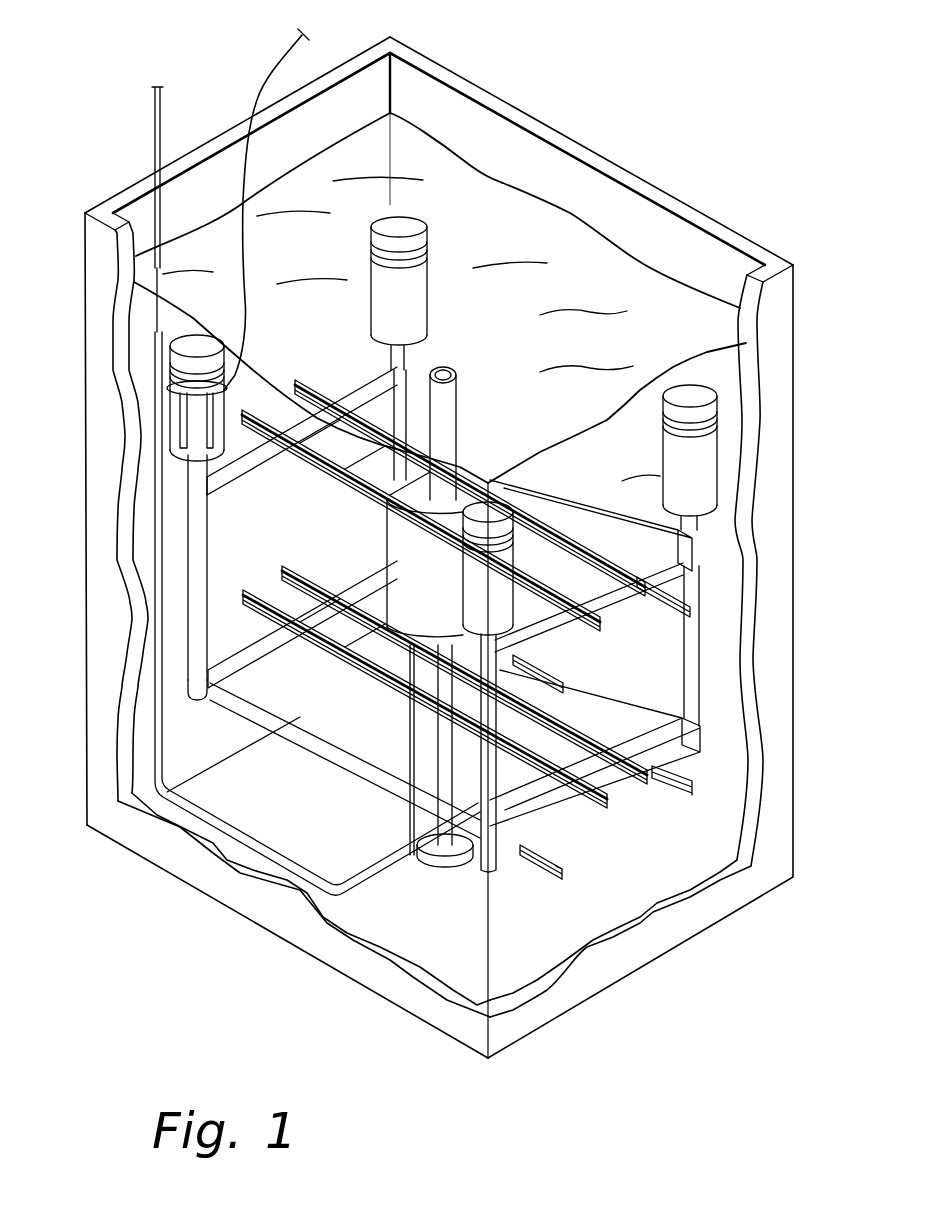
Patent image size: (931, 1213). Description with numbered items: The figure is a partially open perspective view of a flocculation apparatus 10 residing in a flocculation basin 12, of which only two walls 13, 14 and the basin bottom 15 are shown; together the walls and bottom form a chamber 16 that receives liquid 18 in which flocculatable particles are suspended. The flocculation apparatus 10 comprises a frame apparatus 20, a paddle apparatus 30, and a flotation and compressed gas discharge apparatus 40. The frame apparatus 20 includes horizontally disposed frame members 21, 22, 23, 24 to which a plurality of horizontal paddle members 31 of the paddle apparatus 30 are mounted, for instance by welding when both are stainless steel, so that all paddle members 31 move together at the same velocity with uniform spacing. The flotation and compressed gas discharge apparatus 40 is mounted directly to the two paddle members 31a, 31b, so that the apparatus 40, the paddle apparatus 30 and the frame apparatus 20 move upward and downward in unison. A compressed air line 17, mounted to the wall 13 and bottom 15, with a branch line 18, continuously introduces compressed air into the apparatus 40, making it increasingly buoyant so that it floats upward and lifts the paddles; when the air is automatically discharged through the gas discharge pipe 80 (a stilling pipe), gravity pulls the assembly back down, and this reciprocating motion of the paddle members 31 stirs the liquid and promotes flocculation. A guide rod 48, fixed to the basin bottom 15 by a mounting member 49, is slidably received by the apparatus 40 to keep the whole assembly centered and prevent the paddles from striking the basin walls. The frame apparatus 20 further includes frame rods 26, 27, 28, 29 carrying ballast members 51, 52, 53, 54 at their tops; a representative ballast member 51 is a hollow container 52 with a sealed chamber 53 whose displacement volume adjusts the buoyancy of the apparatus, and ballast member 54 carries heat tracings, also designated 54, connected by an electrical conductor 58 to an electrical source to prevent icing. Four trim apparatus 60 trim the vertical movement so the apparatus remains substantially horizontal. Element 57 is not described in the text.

The flocculation apparatus 10 is at (602, 265).
The flocculation basin 12 is at (797, 633).
The wall 13 is at (218, 147).
The wall 14 is at (565, 133).
The basin bottom 15 is at (240, 788).
The chamber 16 is at (395, 922).
The compressed air line 17 is at (232, 827).
The liquid 18 is at (456, 171).
The frame apparatus 20 is at (220, 692).
The frame member 21 is at (670, 538).
The frame member 22 is at (580, 826).
The frame member 23 is at (362, 376).
The frame member 24 is at (262, 657).
The frame rod 26 is at (685, 690).
The frame rod 27 is at (437, 742).
The frame rod 28 is at (412, 352).
The frame rod 29 is at (197, 570).
The paddle apparatus 30 is at (560, 864).
The paddle member 31 is at (541, 871).
The paddle member 31a is at (580, 618).
The paddle member 31b is at (618, 597).
The flotation and compressed gas discharge apparatus 40 is at (392, 536).
The guide rod 48 is at (437, 823).
The mounting member 49 is at (447, 868).
The ballast member 51 is at (672, 479).
The hollow container 52 is at (470, 614).
The sealed chamber 53 is at (432, 300).
The ballast member 54 is at (170, 425).
The sensor holder 57 is at (178, 447).
The electrical conductor 58 is at (289, 53).
The trim apparatus 60 is at (434, 237).
The gas discharge pipe 80 is at (458, 404).